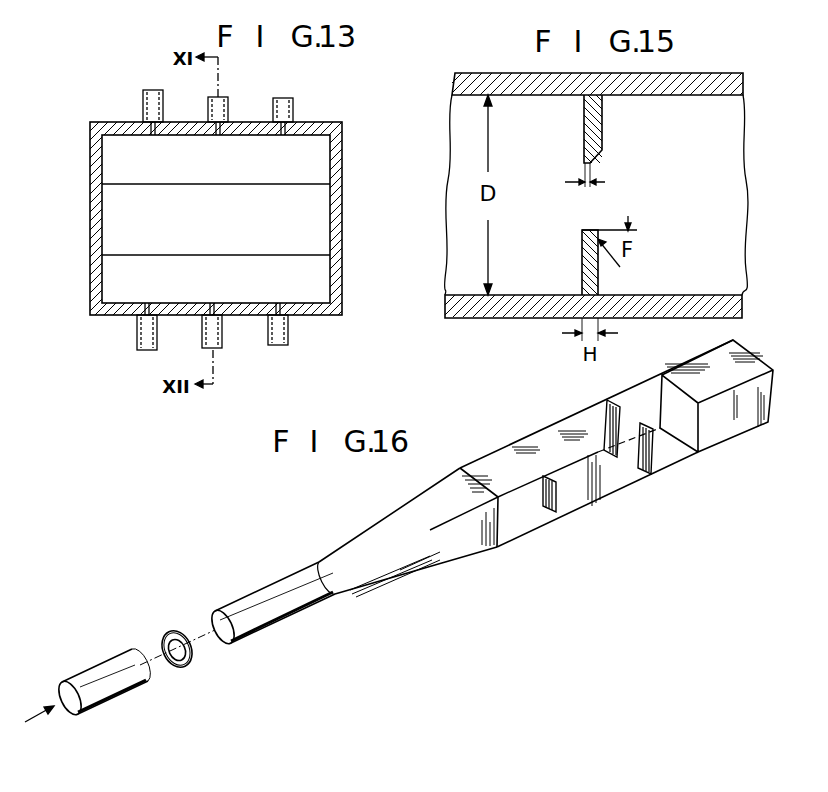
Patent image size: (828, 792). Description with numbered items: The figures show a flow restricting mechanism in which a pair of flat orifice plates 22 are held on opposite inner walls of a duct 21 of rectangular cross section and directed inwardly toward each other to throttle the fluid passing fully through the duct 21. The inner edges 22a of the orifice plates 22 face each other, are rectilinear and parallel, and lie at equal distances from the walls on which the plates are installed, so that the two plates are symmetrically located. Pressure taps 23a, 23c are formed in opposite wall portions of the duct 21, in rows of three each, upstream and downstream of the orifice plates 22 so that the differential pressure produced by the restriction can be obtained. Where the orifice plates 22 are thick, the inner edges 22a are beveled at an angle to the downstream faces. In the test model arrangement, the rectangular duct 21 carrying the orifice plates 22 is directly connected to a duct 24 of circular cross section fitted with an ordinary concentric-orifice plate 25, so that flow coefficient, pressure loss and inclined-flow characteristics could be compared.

In FIG. 13, the duct 21 is at (340, 216).
In FIG. 15, the duct 21 is at (664, 88).
In FIG. 16, the duct 21 is at (550, 514).
In FIG. 13, the orifice plate 22 is at (313, 167).
In FIG. 15, the orifice plate 22 is at (584, 136).
In FIG. 16, the orifice plate 22 is at (655, 470).
In FIG. 13, the inner edge 22a is at (190, 186).
In FIG. 15, the inner edge 22a is at (583, 160).
In FIG. 13, the pressure tap 23a is at (273, 102).
In FIG. 13, the pressure tap 23c is at (158, 343).
In FIG. 16, the duct of circular cross section 24 is at (293, 617).
In FIG. 16, the concentric-orifice plate 25 is at (172, 633).